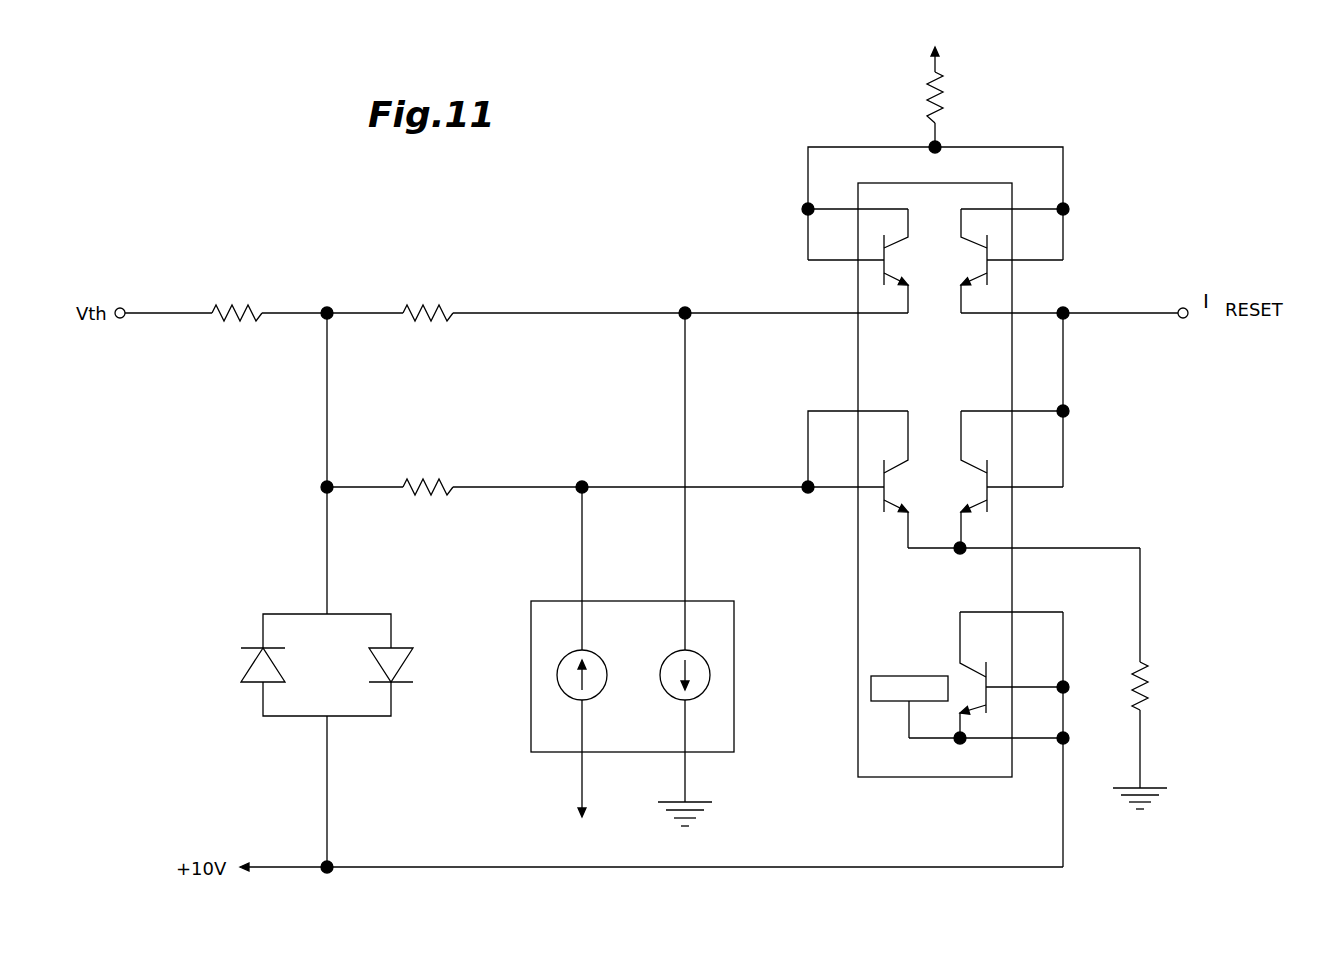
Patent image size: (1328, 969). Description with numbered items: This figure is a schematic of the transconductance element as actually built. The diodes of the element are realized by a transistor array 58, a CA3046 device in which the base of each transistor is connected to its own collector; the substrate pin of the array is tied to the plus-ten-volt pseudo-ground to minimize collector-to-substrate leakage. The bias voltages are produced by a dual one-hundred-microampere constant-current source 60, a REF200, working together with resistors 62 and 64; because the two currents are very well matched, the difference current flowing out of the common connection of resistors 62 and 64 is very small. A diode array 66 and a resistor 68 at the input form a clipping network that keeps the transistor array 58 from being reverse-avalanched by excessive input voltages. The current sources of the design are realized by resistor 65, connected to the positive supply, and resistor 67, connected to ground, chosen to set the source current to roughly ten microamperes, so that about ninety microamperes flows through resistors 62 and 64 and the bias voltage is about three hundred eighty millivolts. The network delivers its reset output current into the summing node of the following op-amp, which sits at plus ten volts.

The transistor array 58 is at (940, 777).
The dual constant-current source 60 is at (531, 696).
The resistor 62 is at (446, 302).
The resistor 64 is at (431, 478).
The resistor 65 is at (948, 105).
The diode array 66 is at (242, 633).
The resistor 67 is at (1152, 686).
The resistor 68 is at (234, 297).